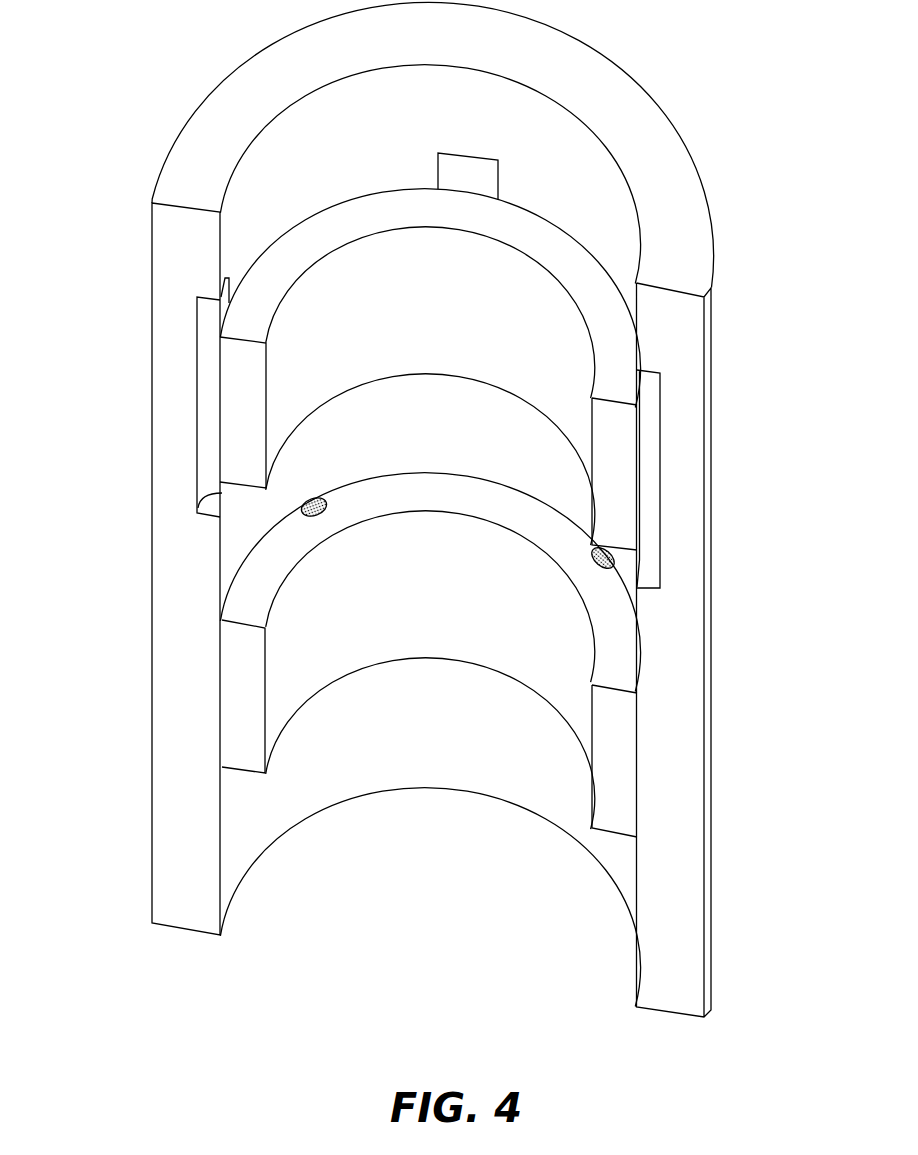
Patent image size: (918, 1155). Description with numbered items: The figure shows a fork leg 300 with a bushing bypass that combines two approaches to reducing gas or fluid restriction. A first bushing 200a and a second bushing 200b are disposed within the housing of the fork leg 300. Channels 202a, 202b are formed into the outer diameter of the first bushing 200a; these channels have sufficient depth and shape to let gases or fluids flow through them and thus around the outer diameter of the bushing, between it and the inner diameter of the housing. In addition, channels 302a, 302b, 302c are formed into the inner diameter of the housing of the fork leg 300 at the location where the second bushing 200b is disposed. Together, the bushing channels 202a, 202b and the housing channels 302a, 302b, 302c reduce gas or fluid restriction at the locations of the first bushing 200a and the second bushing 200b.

The fork leg 300 is at (726, 1006).
The channel 302a is at (208, 349).
The channel 302b is at (468, 173).
The channel 302c is at (648, 512).
The first bushing 200a is at (240, 397).
The second bushing 200b is at (243, 687).
The channel 202a is at (303, 497).
The channel 202b is at (612, 556).